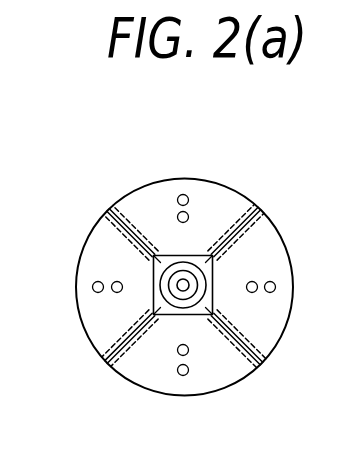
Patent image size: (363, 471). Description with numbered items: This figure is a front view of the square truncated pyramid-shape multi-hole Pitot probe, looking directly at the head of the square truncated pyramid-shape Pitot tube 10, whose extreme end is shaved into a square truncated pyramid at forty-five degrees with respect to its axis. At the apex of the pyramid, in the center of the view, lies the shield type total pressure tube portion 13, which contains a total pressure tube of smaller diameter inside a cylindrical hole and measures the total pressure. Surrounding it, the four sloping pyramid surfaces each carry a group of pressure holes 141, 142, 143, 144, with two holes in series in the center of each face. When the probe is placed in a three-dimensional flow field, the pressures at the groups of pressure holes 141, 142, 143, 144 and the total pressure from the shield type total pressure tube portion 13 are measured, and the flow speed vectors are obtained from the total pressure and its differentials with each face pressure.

The square truncated pyramid-shape Pitot tube 10 is at (225, 173).
The shield type total pressure tube portion 13 is at (186, 284).
The group of pressure holes 141 is at (177, 217).
The group of pressure holes 142 is at (276, 291).
The group of pressure holes 143 is at (193, 360).
The group of pressure holes 144 is at (93, 290).